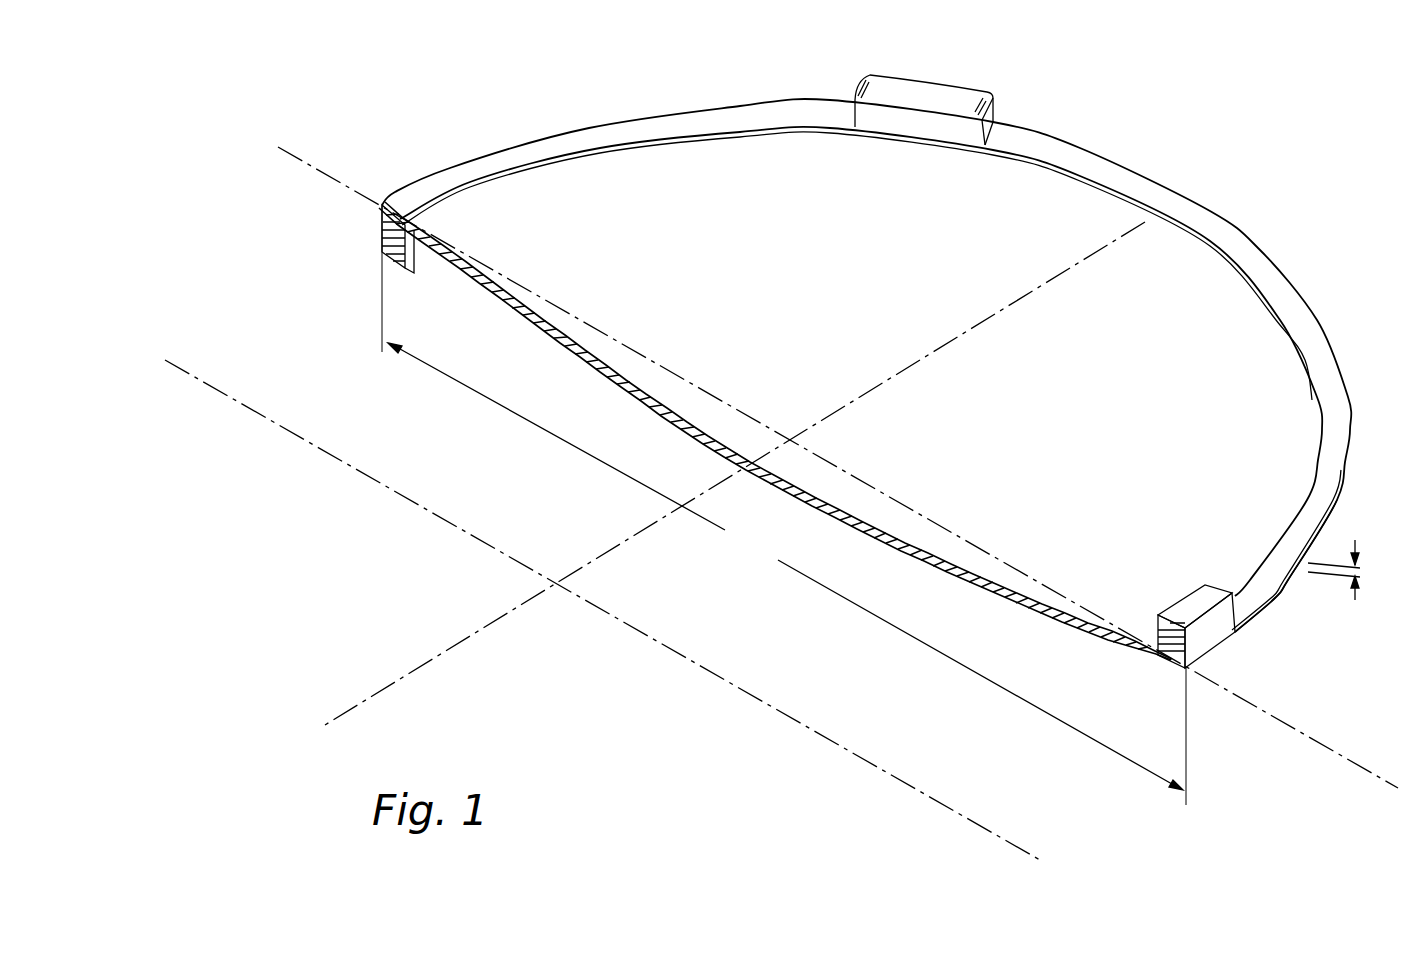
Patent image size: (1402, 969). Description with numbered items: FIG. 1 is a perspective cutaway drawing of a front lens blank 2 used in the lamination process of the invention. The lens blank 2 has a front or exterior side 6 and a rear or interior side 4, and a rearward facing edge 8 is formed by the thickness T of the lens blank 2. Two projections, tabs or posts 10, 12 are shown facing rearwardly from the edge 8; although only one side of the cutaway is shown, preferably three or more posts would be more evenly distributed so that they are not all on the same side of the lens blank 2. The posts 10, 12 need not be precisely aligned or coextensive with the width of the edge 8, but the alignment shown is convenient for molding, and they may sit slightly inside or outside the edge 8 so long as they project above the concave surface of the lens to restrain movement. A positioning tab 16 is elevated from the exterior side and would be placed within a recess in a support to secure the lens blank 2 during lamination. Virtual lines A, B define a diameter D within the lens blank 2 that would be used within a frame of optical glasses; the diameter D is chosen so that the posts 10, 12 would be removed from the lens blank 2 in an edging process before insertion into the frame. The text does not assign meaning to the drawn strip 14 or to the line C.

The front lens blank 2 is at (1288, 195).
The rear or interior side 4 is at (1326, 360).
The front or exterior side 6 is at (1338, 507).
The rearward facing edge 8 is at (1262, 626).
The post 10 is at (963, 86).
The post 12 is at (1210, 637).
The chord strip 14 is at (775, 431).
The positioning tab 16 is at (410, 263).
The virtual line A is at (1010, 570).
The virtual line B is at (737, 474).
The line C is at (632, 630).
The diameter D is at (784, 505).
The thickness T is at (1355, 602).